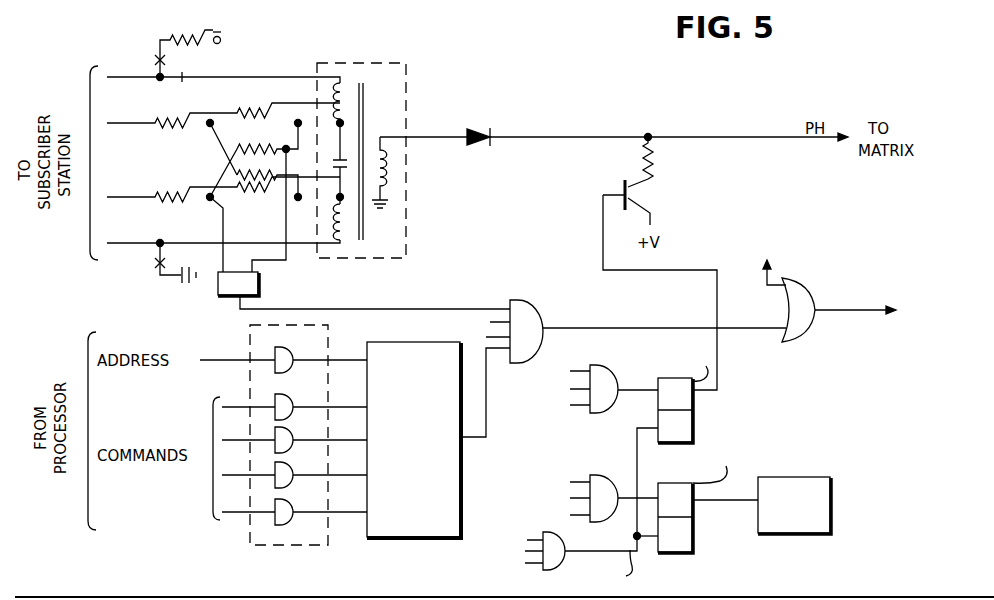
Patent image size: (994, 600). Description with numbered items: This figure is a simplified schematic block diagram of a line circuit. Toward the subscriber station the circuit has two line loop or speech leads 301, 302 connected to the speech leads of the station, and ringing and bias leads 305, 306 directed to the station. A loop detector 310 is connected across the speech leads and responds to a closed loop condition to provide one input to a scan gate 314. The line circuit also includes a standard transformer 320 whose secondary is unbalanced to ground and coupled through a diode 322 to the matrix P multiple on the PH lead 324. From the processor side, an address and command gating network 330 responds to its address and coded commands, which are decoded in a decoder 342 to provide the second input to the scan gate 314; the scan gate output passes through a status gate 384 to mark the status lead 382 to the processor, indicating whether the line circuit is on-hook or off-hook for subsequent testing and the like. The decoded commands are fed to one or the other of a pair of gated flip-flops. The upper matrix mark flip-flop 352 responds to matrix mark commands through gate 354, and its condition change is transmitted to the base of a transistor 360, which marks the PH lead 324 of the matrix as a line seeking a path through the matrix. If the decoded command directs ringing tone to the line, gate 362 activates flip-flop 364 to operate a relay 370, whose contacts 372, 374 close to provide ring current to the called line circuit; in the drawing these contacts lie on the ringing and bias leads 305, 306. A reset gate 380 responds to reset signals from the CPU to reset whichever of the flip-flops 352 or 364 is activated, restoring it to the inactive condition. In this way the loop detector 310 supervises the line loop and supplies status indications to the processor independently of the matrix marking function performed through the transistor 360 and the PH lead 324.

The ringing and bias lead 305 is at (145, 77).
The line loop or speech lead 301 is at (143, 123).
The line loop or speech lead 302 is at (143, 197).
The ringing and bias lead 306 is at (144, 243).
The relay contact 372 is at (170, 60).
The relay contact 374 is at (158, 268).
The loop detector 310 is at (260, 290).
The transformer 320 is at (408, 99).
The diode 322 is at (471, 126).
The PH lead 324 is at (772, 137).
The transistor 360 is at (620, 180).
The scan gate 314 is at (542, 305).
The address and command gating network 330 is at (250, 528).
The decoder 342 is at (406, 538).
The gate 354 is at (633, 343).
The matrix mark flip-flop 352 is at (693, 415).
The gate 362 is at (621, 450).
The flip-flop 364 is at (693, 538).
The relay 370 is at (833, 458).
The reset gate 380 is at (547, 530).
The status lead 382 is at (863, 309).
The status gate 384 is at (790, 342).